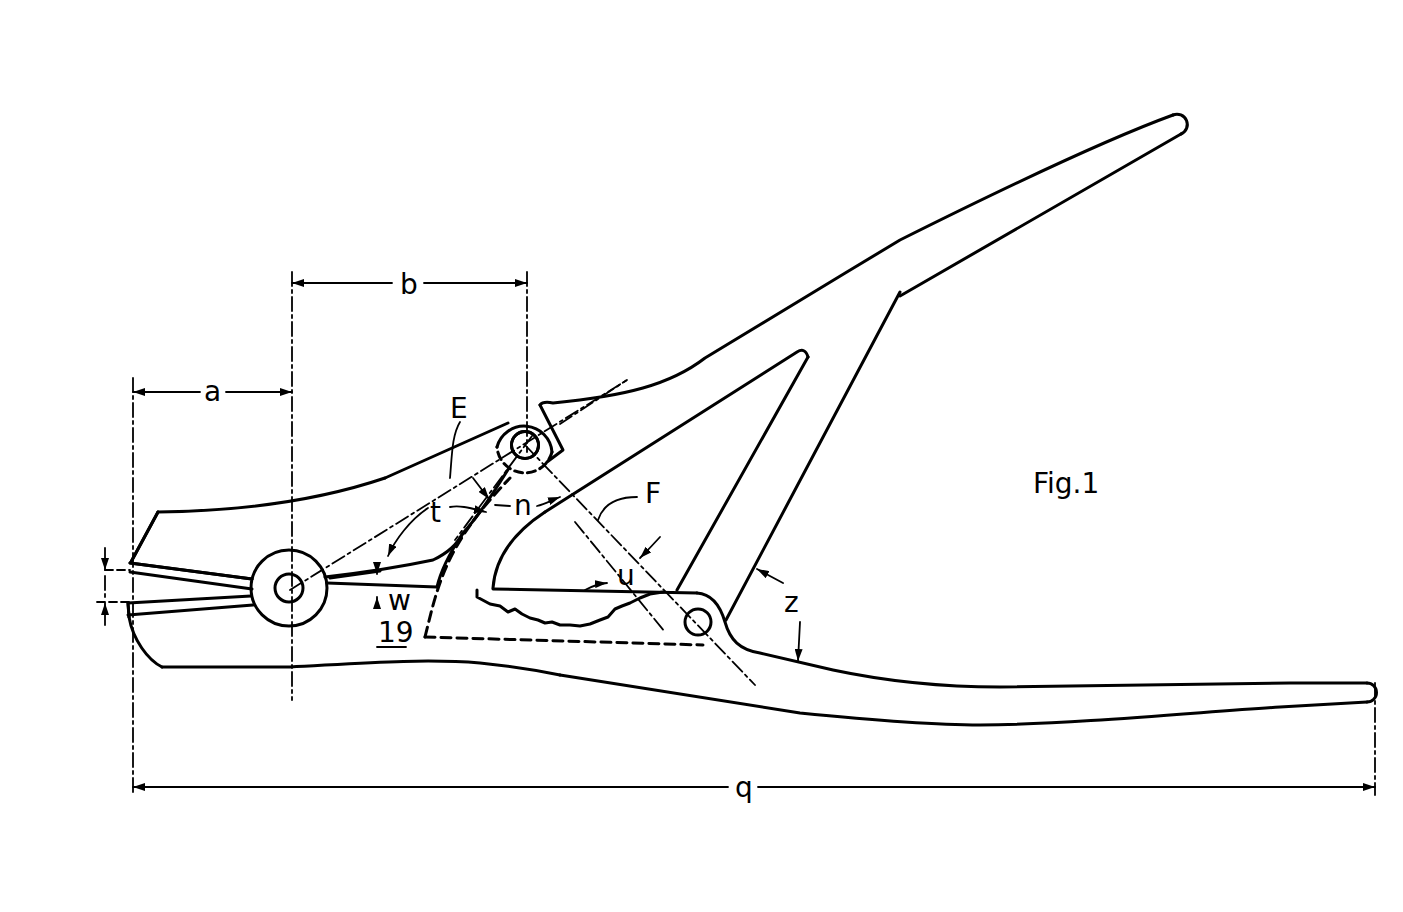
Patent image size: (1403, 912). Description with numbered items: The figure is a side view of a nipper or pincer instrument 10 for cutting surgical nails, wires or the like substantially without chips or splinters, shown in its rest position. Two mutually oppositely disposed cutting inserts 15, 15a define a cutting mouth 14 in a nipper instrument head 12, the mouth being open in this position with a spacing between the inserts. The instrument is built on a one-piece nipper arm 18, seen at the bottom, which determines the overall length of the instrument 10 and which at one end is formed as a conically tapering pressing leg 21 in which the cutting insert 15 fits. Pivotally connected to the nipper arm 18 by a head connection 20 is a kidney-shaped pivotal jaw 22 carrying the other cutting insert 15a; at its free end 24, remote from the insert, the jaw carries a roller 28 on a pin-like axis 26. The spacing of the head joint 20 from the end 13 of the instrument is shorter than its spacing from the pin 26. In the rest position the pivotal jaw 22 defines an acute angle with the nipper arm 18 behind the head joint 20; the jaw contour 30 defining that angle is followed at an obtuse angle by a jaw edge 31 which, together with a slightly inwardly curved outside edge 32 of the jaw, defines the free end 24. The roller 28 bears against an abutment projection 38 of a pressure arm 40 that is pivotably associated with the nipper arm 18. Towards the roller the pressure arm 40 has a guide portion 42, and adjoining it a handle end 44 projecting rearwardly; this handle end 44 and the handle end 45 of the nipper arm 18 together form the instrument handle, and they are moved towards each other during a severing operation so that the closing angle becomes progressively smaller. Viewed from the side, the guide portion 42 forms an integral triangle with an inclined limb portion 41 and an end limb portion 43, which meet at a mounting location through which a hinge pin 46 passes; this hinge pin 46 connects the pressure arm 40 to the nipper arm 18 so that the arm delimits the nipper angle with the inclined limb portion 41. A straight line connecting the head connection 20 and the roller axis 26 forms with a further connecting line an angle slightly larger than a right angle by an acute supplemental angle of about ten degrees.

The nipper or pincer instrument 10 is at (471, 270).
The nipper instrument head 12 is at (213, 633).
The end of the nipper instrument 13 is at (128, 618).
The cutting mouth 14 is at (147, 578).
The cutting insert 15 is at (162, 608).
The cutting insert 15a is at (180, 572).
The nipper arm 18 is at (815, 695).
The head connection 20 is at (292, 630).
The pressing leg 21 is at (261, 649).
The pivotal jaw 22 is at (269, 534).
The free end of the jaw 24 is at (552, 403).
The pin-like axis 26 is at (531, 432).
The roller 28 is at (520, 420).
The jaw contour 30 is at (378, 568).
The jaw edge 31 is at (515, 545).
The outside edge 32 is at (380, 478).
The abutment projection 38 is at (572, 414).
The pressure arm 40 is at (819, 302).
The inclined limb portion 41 is at (820, 410).
The guide portion 42 is at (705, 380).
The end limb portion 43 is at (570, 608).
The handle end 44 is at (1122, 152).
The handle end 45 is at (1108, 703).
The hinge pin 46 is at (703, 612).